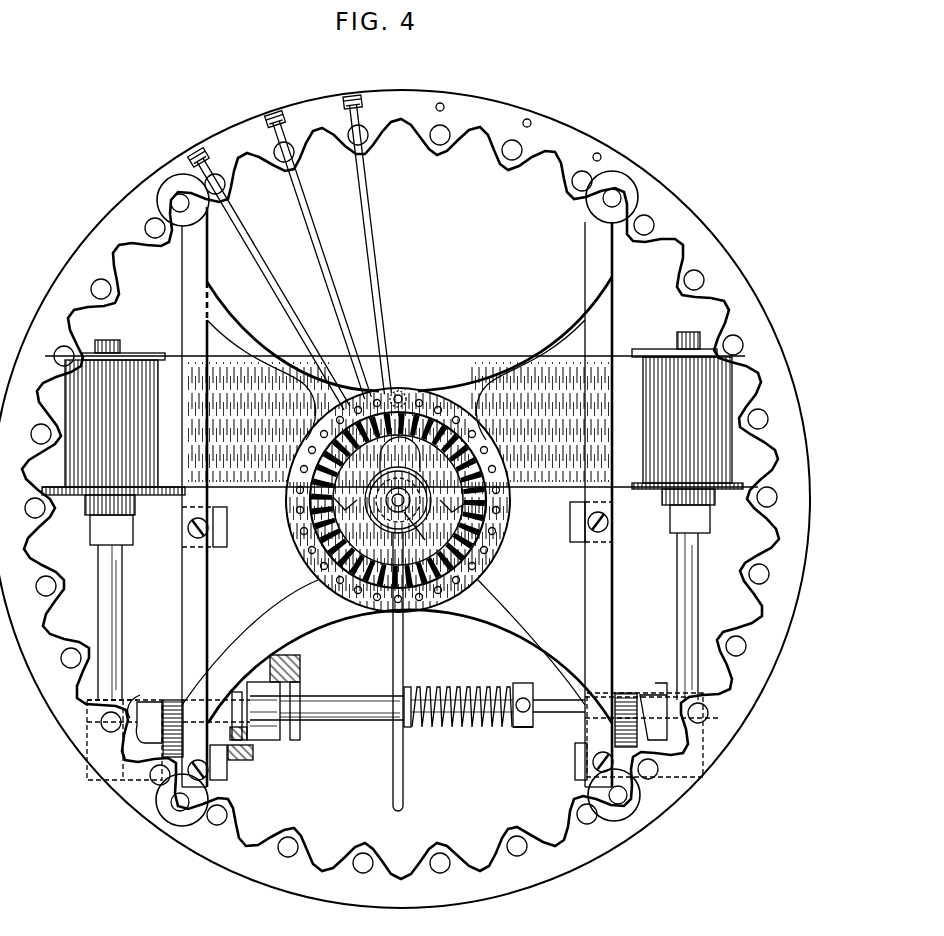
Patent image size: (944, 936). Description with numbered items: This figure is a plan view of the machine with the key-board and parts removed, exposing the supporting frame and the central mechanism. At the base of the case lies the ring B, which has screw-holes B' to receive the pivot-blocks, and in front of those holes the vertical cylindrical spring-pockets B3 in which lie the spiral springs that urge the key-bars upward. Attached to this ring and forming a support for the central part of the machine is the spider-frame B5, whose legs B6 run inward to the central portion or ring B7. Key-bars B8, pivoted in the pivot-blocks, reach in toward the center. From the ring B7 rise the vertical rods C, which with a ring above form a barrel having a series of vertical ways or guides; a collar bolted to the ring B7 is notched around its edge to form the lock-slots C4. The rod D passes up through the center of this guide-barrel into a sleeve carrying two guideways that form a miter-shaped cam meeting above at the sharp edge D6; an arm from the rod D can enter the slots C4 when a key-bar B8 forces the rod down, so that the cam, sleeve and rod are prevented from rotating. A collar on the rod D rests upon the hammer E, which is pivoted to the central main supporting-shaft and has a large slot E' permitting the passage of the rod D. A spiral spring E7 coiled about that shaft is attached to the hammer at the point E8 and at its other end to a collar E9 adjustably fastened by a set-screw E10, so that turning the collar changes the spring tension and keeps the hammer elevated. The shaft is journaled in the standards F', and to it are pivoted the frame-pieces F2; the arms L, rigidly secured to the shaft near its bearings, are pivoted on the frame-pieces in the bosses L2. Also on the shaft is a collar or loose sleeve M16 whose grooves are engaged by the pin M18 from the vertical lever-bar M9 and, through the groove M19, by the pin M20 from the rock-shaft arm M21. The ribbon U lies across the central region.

The ring B is at (405, 499).
The screw-holes B' is at (528, 122).
The spring-pockets B3 is at (698, 278).
The spider-frame B5 is at (483, 355).
The legs B6 is at (251, 341).
The central portion or ring B7 is at (489, 452).
The key-bars B8 is at (373, 259).
The ribbon U is at (398, 487).
The vertical rods C is at (463, 579).
The slots C4 is at (470, 505).
The rod D is at (392, 508).
The sharp edge D6 is at (418, 536).
The hammer E is at (416, 672).
The slot E' is at (400, 454).
The spiral spring E7 is at (432, 700).
The attachment point E8 is at (403, 691).
The collar E9 is at (519, 728).
The set-screw E10 is at (520, 684).
The standards F' is at (403, 702).
The frame-pieces F2 is at (397, 497).
The arms L is at (148, 703).
The bosses L2 is at (172, 700).
The vertical lever-bar M9 is at (300, 662).
The collar or loose sleeve M16 is at (325, 742).
The pin M18 is at (300, 690).
The groove M19 is at (245, 700).
The pin M20 is at (255, 740).
The rock-shaft arm M21 is at (252, 760).